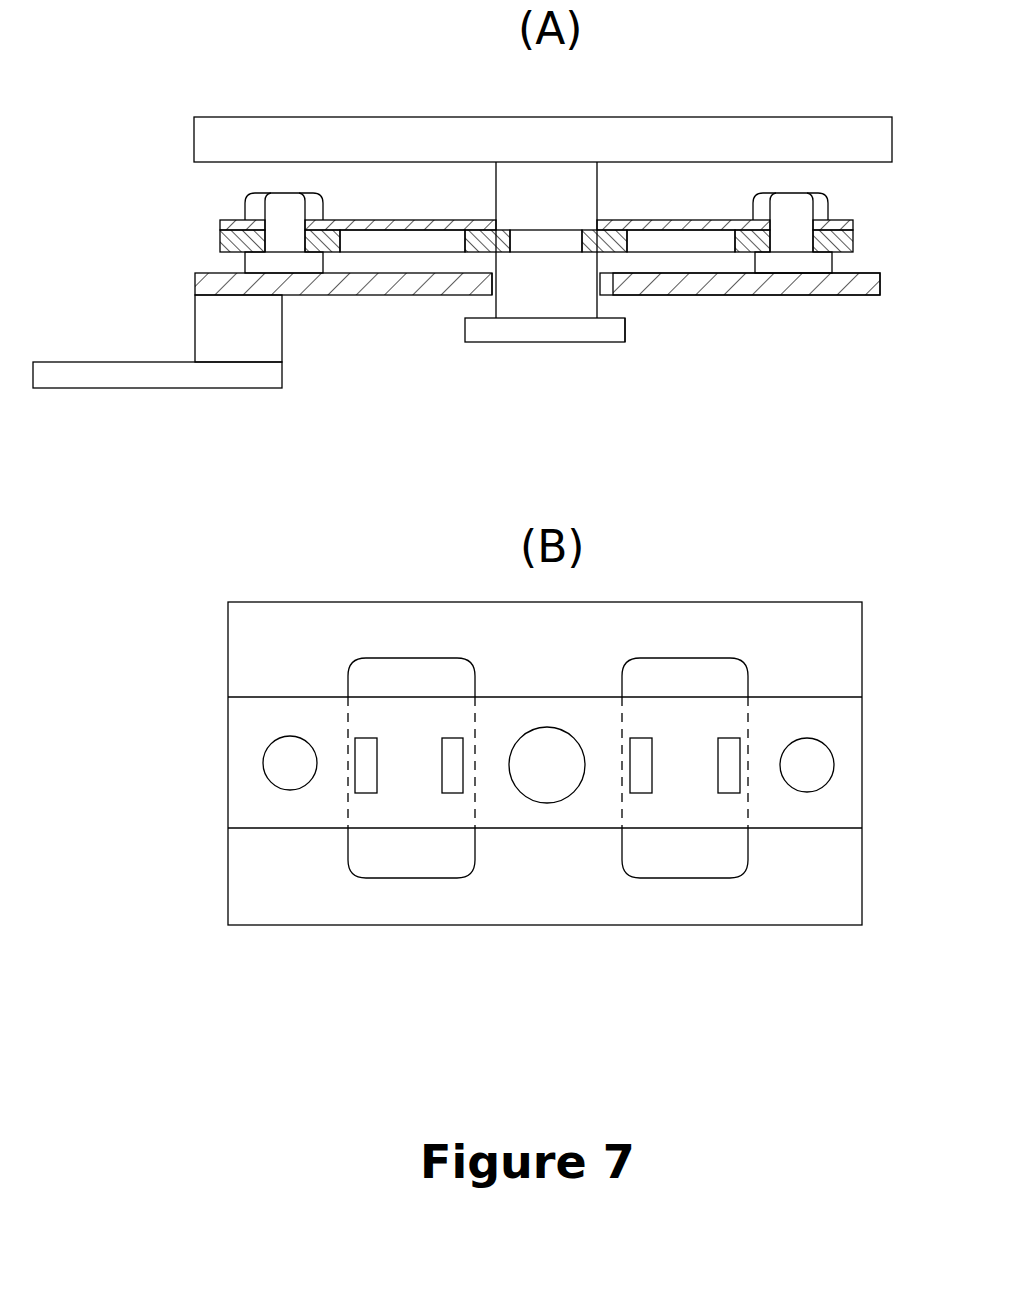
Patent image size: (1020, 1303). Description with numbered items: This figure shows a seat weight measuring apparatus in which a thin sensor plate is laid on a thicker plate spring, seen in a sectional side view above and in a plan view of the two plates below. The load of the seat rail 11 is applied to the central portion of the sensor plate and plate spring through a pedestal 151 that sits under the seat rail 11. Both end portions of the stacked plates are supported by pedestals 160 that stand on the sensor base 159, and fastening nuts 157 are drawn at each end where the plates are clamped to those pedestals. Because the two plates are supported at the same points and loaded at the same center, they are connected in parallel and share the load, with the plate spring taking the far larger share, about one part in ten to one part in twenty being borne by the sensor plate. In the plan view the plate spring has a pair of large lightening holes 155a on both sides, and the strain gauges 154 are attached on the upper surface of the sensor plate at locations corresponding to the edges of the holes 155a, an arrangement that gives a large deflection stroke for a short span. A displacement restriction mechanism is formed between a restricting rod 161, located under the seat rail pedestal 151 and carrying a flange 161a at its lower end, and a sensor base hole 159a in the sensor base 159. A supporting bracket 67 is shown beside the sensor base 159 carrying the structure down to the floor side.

The seat rail 11 is at (374, 126).
The pedestal 151 is at (570, 191).
The strain gauges 154 is at (727, 760).
The lightening holes 155a is at (386, 672).
The nut 157 is at (254, 211).
The sensor base 159 is at (385, 294).
The sensor base hole 159a is at (490, 297).
The pedestals 160 is at (254, 265).
The restricting rod 161 is at (550, 297).
The flange edge 161a is at (616, 332).
The bracket 67 is at (198, 333).